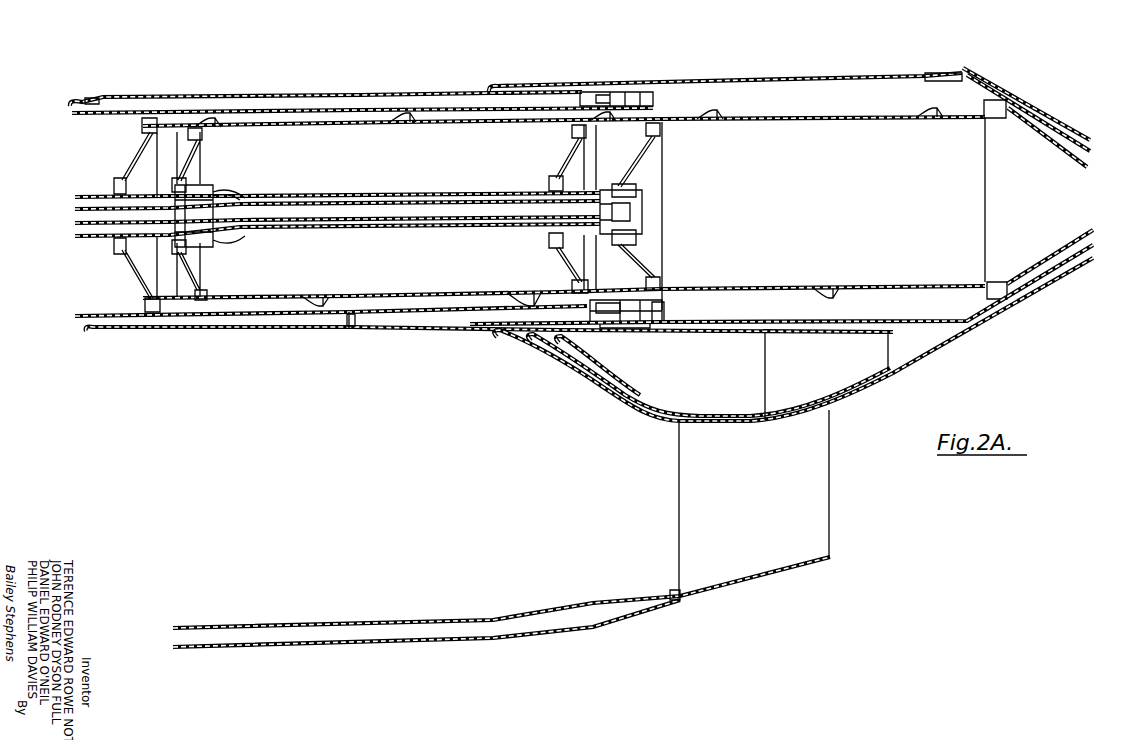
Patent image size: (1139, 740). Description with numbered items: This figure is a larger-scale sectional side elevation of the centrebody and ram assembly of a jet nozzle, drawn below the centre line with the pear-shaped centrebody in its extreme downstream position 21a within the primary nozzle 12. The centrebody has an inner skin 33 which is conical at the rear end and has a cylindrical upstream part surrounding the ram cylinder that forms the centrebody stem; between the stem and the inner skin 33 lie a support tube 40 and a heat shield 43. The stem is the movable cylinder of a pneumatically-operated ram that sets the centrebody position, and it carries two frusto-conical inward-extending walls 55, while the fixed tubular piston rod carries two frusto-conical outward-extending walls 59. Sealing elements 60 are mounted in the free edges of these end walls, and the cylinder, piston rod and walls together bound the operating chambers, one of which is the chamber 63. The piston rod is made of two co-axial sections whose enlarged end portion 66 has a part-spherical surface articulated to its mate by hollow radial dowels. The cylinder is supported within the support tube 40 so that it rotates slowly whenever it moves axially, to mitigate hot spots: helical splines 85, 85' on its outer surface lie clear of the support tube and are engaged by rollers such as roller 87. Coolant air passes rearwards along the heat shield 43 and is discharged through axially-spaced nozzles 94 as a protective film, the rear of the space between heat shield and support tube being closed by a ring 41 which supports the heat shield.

The primary nozzle 12 is at (755, 501).
The extreme downstream position of centrebody 21a is at (636, 418).
The inner skin 33 is at (738, 319).
The support tube 40 is at (293, 318).
The ring 41 is at (661, 322).
The heat shield 43 is at (252, 328).
The inward-extending walls 55 is at (140, 151).
The outward-extending walls 59 is at (193, 155).
The sealing elements 60 is at (203, 293).
The operating chamber 63 is at (385, 168).
The enlarged end portion 66 is at (216, 194).
The helical spline 85 is at (635, 333).
The helical spline 85' is at (495, 325).
The roller 87 is at (606, 304).
The axially-spaced nozzles 94 is at (351, 329).